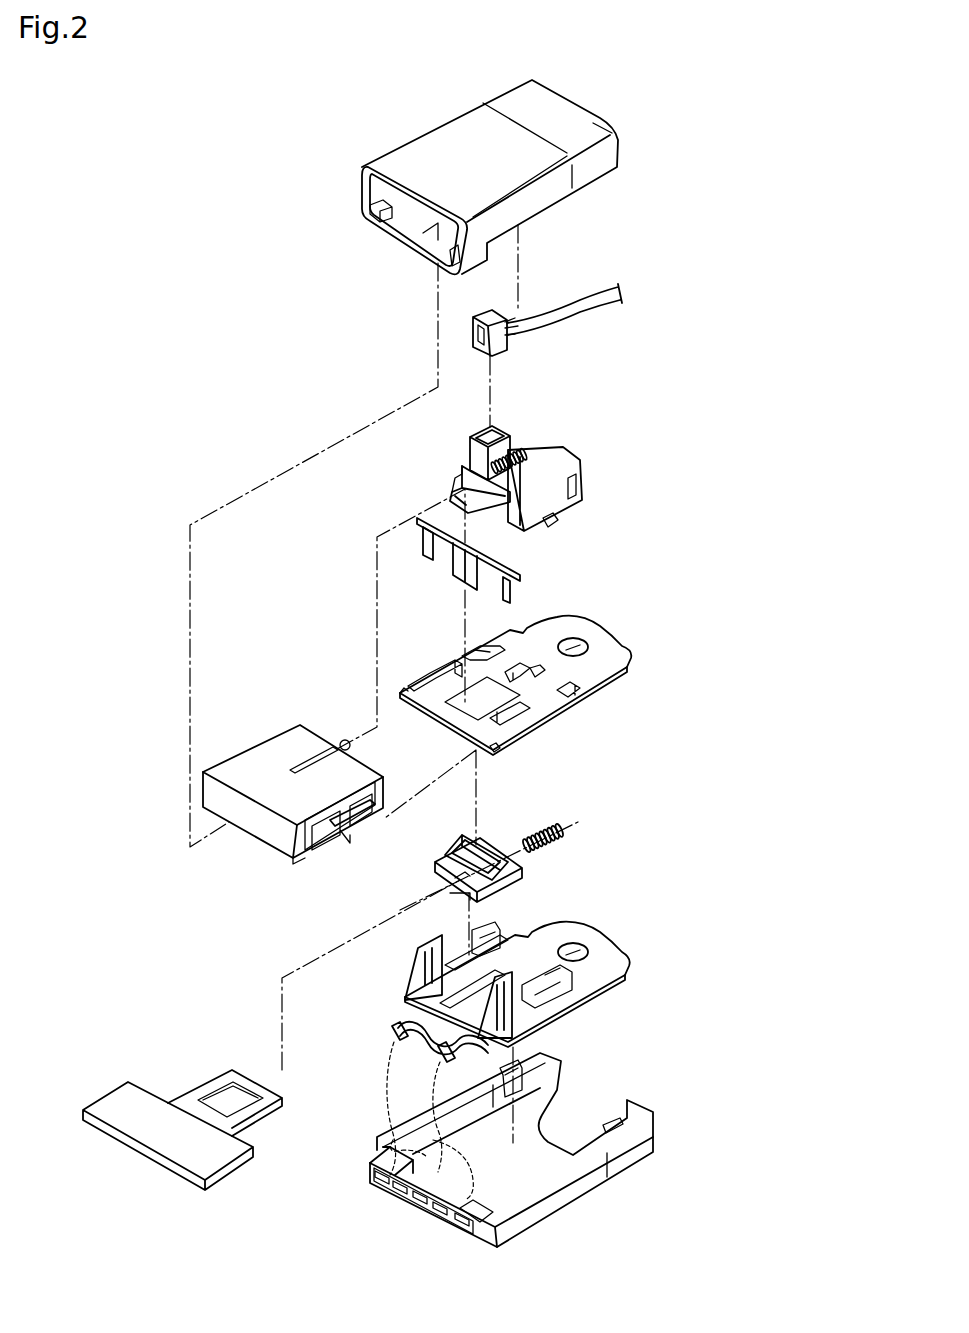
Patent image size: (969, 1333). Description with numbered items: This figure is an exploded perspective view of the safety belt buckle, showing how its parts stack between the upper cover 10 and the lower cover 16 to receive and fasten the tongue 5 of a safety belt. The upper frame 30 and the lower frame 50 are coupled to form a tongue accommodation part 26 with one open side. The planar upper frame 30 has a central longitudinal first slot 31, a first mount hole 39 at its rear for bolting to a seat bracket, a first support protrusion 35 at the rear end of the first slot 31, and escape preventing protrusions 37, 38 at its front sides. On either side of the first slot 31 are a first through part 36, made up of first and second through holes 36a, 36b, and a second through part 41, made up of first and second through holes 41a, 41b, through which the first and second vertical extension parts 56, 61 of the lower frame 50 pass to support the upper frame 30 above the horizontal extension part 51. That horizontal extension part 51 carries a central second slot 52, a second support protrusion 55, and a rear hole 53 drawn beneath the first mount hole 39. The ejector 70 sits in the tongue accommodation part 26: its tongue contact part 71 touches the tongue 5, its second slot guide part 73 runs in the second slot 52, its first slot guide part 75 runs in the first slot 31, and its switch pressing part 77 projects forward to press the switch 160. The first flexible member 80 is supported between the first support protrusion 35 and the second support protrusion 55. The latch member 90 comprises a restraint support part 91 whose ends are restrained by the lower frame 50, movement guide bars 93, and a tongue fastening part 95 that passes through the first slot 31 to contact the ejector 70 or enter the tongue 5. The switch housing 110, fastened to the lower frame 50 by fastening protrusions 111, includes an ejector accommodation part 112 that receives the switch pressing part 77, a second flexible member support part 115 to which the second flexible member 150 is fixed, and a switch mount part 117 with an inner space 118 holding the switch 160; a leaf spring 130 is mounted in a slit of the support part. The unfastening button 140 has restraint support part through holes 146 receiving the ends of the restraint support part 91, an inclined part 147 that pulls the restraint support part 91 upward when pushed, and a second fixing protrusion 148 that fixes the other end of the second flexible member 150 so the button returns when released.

The upper cover 10 is at (600, 130).
The switch 160 is at (578, 278).
The switch housing 110 is at (488, 432).
The switch mount part 117 is at (478, 428).
The ejector accommodation part 112 is at (462, 470).
The second flexible member support part 115 is at (518, 447).
The second flexible member 150 is at (540, 450).
The inner space 118 is at (573, 478).
The leaf spring 130 is at (470, 497).
The fastening protrusions 111 is at (556, 523).
The latch member 90 is at (407, 547).
The restraint support part 91 is at (447, 540).
The movement guide bars 93 is at (425, 540).
The tongue fastening part 95 is at (455, 565).
The upper frame 30 is at (530, 657).
The first slot 31 is at (516, 670).
The first support protrusion 35 is at (537, 667).
The first mount hole 39 is at (579, 640).
The second through part 41 is at (407, 652).
The first through hole 41a is at (413, 684).
The second through hole 41b is at (468, 654).
The first through part 36 is at (621, 700).
The first through hole 36a is at (545, 733).
The second through hole 36b is at (587, 693).
The escape preventing protrusion 37 is at (500, 750).
The escape preventing protrusion 38 is at (400, 698).
The unfastening button 140 is at (291, 749).
The restraint support part through holes 146 is at (343, 742).
The second fixing protrusion 148 is at (343, 813).
The inclined part 147 is at (292, 853).
The ejector 70 is at (425, 894).
The switch pressing part 77 is at (453, 836).
The first slot guide part 75 is at (460, 868).
The tongue contact part 71 is at (442, 895).
The second slot guide part 73 is at (425, 921).
The first flexible member 80 is at (565, 825).
The lower frame 50 is at (490, 1027).
The horizontal extension part 51 is at (603, 962).
The hole 53 is at (578, 950).
The second support protrusion 55 is at (537, 977).
The first vertical extension part 56 is at (555, 1007).
The second vertical extension part 61 is at (410, 978).
The tongue accommodation part 26 is at (400, 1030).
The second slot 52 is at (430, 1121).
The tongue 5 is at (195, 1087).
The lower cover 16 is at (628, 1152).